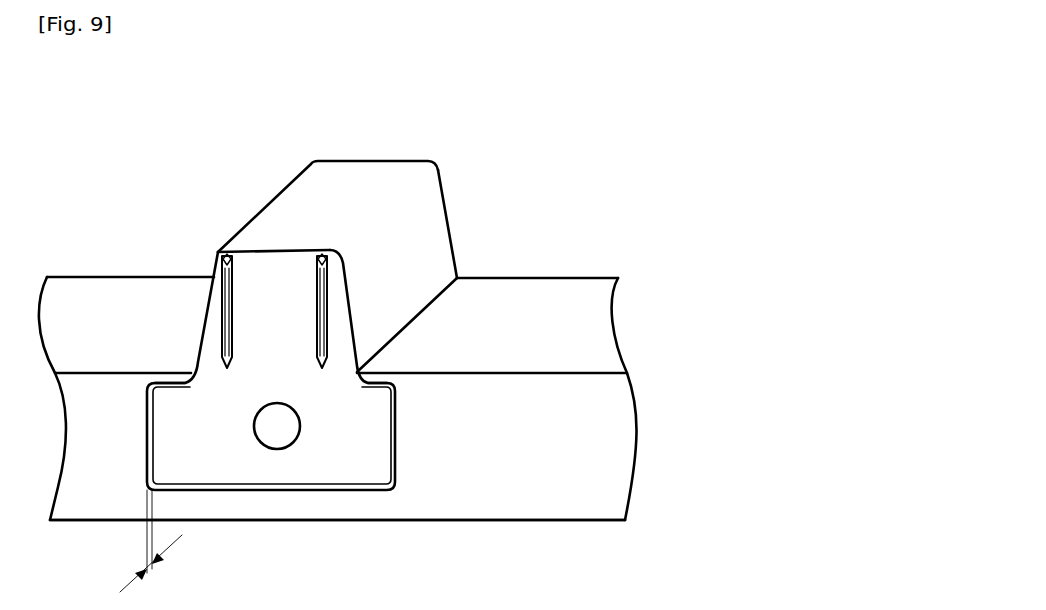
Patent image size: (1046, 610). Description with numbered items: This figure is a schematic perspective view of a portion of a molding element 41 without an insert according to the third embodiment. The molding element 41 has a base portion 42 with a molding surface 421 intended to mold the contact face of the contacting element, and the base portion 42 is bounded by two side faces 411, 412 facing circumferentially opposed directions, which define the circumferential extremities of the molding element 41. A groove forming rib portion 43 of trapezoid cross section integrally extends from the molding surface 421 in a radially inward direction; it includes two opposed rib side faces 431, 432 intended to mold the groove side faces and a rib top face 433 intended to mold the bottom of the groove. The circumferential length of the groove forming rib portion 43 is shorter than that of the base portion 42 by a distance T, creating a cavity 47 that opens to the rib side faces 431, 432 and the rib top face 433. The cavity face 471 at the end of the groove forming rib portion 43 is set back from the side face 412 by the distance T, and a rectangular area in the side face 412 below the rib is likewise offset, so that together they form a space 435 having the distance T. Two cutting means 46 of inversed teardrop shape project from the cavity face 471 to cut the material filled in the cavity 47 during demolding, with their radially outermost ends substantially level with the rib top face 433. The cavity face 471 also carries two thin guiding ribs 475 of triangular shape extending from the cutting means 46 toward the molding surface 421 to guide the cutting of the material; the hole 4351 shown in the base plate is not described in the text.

The molding element 41 is at (512, 151).
The base portion 42 is at (337, 280).
The molding surface 421 is at (136, 327).
The side face 411 is at (612, 268).
The side face 412 is at (526, 475).
The groove forming rib portion 43 is at (324, 348).
The rib side face 431 is at (293, 178).
The rib side face 432 is at (441, 263).
The rib top face 433 is at (368, 178).
The space 435 is at (343, 450).
The hole 4351 is at (268, 440).
The cutting means 46 is at (212, 254).
The cavity 47 is at (260, 275).
The cavity face 471 is at (297, 323).
The thin guiding rib 475 is at (237, 347).
The distance T is at (157, 544).